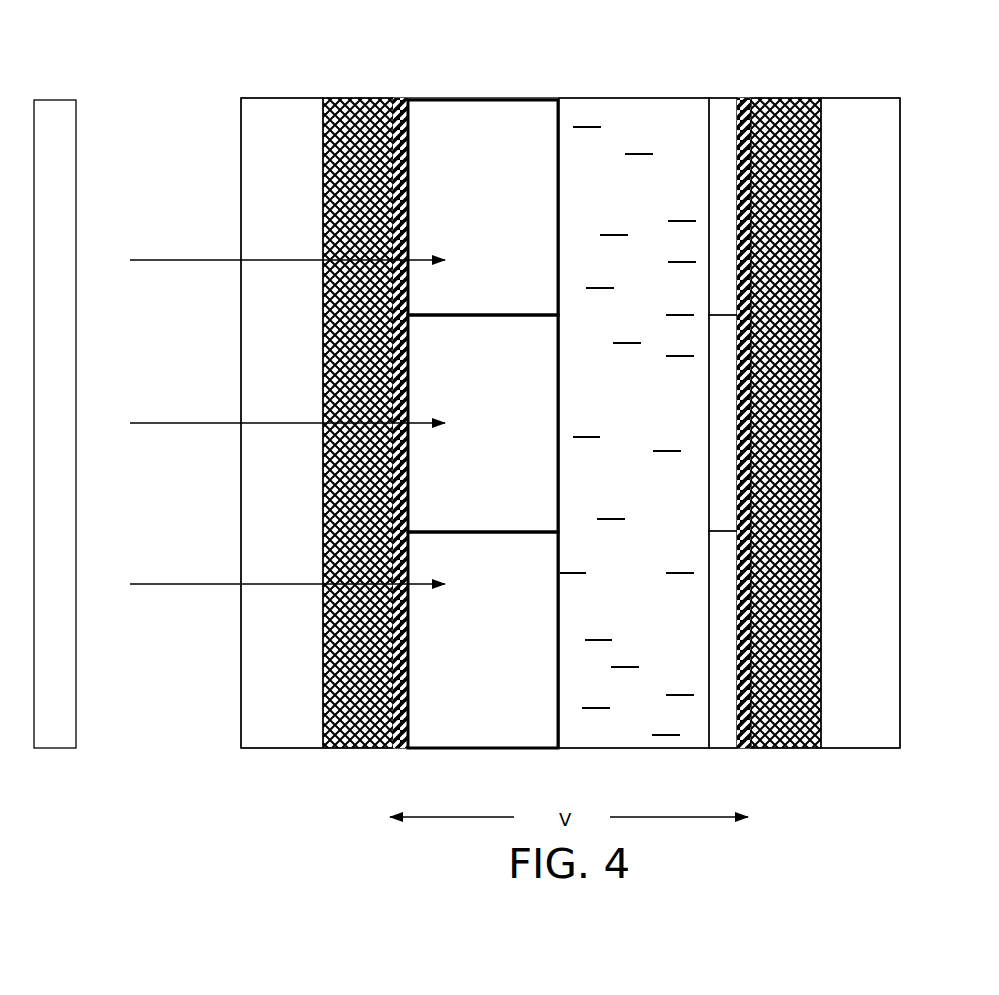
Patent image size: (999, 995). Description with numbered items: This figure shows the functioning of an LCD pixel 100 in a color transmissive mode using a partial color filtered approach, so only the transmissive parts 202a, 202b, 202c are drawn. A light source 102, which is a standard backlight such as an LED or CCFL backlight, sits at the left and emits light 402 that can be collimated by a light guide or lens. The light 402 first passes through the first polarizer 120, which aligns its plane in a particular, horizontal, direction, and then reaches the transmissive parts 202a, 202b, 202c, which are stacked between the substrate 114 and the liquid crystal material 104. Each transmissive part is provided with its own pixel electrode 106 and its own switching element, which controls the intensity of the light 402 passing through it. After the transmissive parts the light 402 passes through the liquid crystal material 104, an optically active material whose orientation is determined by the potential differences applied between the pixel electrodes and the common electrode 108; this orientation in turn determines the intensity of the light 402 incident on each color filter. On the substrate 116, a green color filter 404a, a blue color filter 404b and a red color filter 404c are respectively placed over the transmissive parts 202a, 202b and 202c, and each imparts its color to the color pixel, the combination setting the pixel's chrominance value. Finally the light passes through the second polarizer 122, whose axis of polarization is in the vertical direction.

The pixel 100 is at (168, 777).
The light source 102 is at (53, 750).
The liquid crystal material 104 is at (667, 110).
The pixel electrode 106 is at (405, 750).
The common electrode 108 is at (745, 750).
The substrate 114 is at (350, 98).
The substrate 116 is at (780, 98).
The first polarizer 120 is at (281, 98).
The second polarizer 122 is at (862, 98).
The transmissive part 202a is at (483, 207).
The transmissive part 202b is at (483, 423).
The transmissive part 202c is at (483, 640).
The light 402 is at (198, 584).
The green color filter 404a is at (722, 194).
The blue color filter 404b is at (722, 425).
The red color filter 404c is at (722, 627).